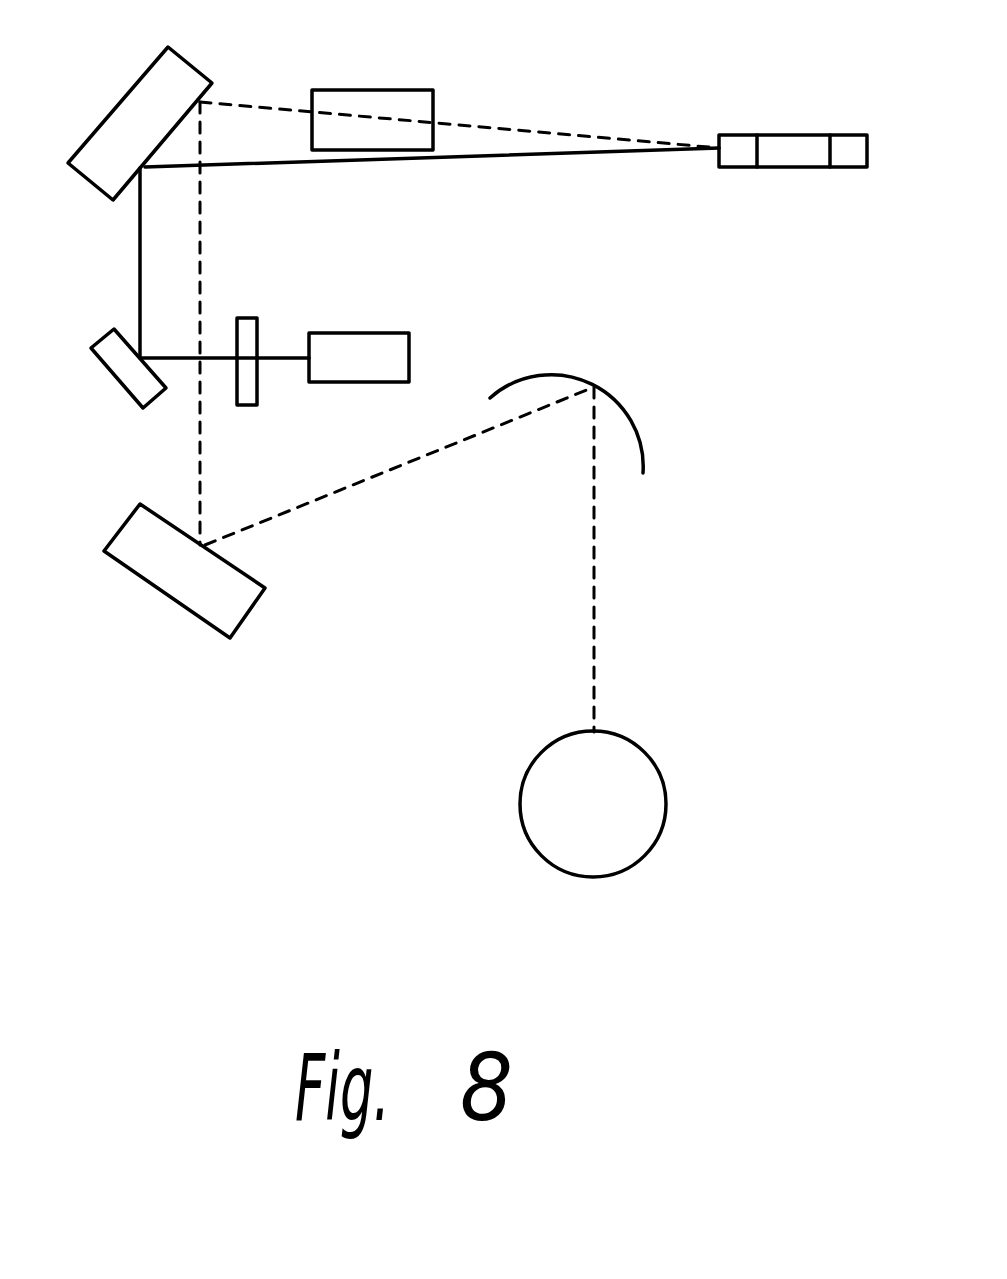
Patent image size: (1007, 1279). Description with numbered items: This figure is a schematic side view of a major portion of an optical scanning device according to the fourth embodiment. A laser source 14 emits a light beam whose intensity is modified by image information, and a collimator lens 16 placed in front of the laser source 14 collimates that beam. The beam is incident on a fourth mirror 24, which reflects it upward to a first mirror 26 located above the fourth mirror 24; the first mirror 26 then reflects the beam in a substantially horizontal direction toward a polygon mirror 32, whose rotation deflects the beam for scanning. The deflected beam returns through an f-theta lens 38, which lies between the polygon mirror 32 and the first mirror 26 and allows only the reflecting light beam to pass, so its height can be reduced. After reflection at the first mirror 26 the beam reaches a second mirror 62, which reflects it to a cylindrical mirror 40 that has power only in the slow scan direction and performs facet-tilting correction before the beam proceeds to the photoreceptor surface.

The laser source 14 is at (360, 382).
The collimator lens 16 is at (250, 405).
The fourth mirror 24 is at (100, 363).
The first mirror 26 is at (112, 110).
The polygon mirror 32 is at (790, 133).
The f-theta lens 38 is at (385, 90).
The cylindrical mirror 40 is at (643, 458).
The second mirror 62 is at (140, 576).